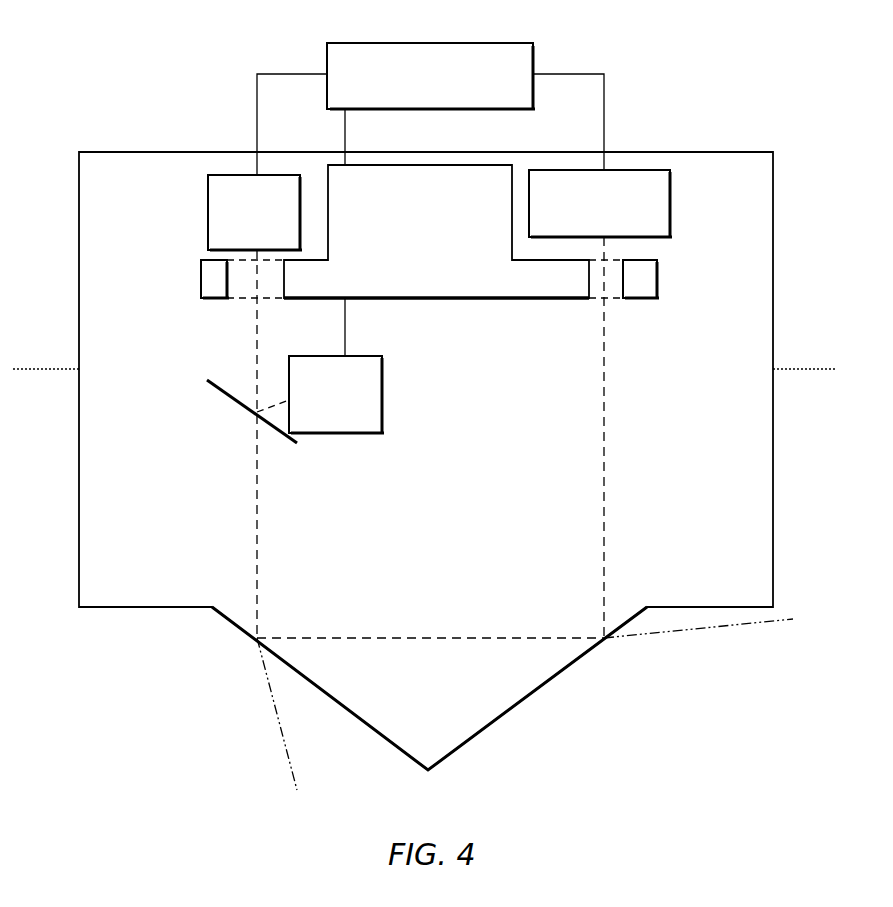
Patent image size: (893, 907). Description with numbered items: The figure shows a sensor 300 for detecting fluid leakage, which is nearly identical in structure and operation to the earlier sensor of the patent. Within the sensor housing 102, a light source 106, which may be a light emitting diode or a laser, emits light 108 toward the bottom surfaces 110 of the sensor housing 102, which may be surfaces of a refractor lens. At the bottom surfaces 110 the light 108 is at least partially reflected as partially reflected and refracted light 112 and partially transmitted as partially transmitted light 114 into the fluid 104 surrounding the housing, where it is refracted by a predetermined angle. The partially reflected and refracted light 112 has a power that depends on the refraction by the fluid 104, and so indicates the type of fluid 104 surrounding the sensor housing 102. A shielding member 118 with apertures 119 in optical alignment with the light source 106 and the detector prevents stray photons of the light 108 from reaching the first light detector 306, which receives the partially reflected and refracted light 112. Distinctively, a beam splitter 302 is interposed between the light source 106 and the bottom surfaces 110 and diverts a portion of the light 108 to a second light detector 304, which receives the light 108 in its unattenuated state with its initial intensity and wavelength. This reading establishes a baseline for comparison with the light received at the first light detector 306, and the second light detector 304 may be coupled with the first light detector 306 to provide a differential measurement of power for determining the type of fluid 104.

The sensor 300 is at (425, 395).
The sensor housing 102 is at (669, 152).
The fluid 104 is at (810, 369).
The light source 106 is at (208, 206).
The light 108 is at (257, 538).
The bottom surfaces 110 is at (360, 722).
The partially reflected and refracted light 112 is at (603, 456).
The partially transmitted light 114 is at (280, 726).
The shielding member 118 is at (465, 43).
The apertures 119 is at (230, 300).
The beam splitter 302 is at (236, 400).
The second light detector 304 is at (348, 433).
The first light detector 306 is at (670, 216).